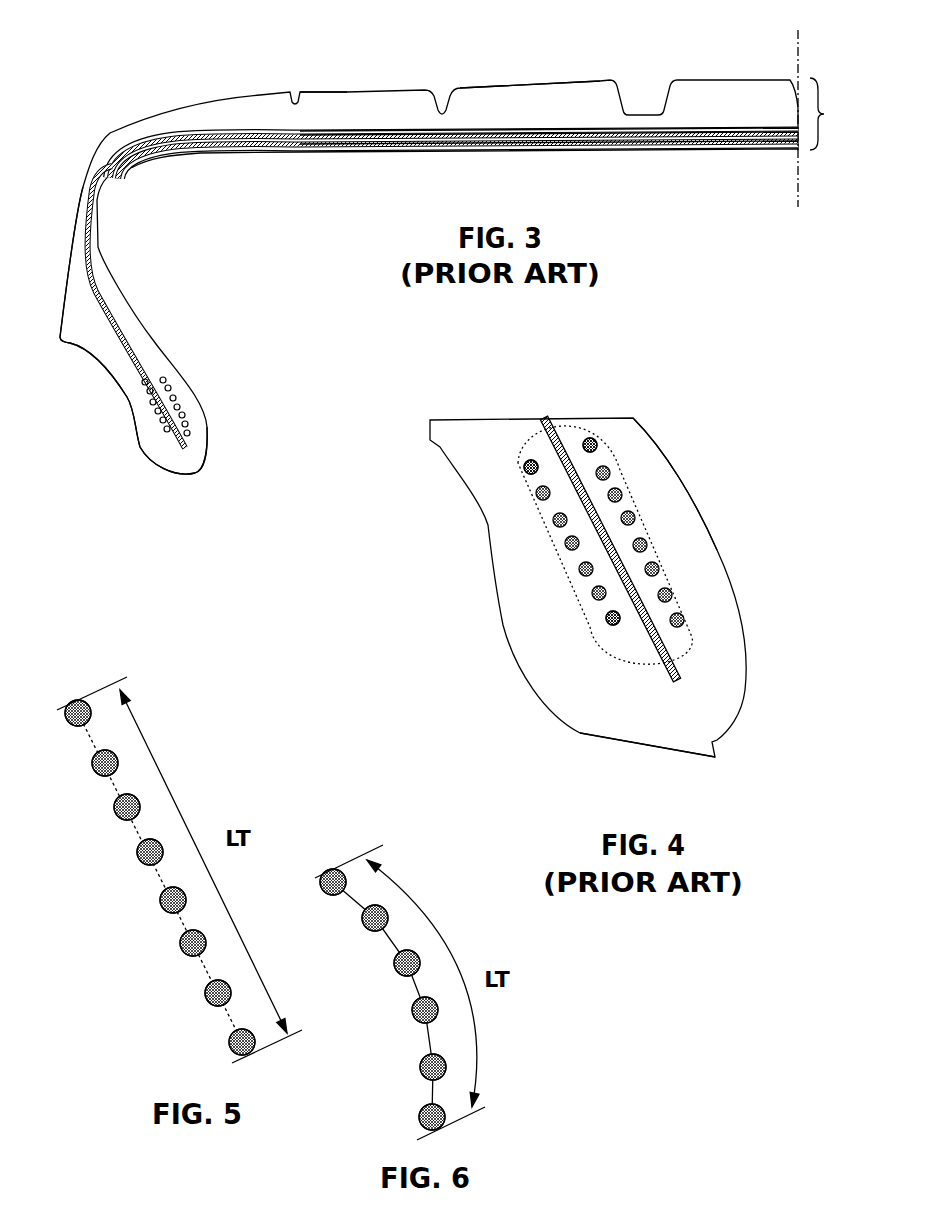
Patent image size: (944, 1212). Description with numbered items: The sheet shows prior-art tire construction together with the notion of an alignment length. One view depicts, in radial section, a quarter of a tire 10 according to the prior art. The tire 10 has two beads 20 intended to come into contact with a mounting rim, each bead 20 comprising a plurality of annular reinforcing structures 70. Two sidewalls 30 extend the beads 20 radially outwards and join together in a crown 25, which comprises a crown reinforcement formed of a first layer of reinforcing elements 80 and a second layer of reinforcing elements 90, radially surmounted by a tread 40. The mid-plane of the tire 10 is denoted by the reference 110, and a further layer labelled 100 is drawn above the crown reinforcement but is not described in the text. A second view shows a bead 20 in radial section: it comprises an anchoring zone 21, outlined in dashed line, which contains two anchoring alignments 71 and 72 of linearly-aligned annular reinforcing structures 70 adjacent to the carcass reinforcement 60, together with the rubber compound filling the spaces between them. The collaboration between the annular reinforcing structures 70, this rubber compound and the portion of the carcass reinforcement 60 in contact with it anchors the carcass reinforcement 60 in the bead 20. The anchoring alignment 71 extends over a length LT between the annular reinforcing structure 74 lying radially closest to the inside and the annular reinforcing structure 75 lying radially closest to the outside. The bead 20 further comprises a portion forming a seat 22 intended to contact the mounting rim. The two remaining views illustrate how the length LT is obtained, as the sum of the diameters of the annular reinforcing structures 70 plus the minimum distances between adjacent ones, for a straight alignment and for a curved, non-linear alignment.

In FIG. 3, the tire 10 is at (125, 80).
In FIG. 3, the bead 20 is at (143, 440).
In FIG. 4, the bead 20 is at (800, 468).
In FIG. 4, the anchoring zone 21 is at (623, 477).
In FIG. 4, the seat 22 is at (650, 752).
In FIG. 3, the crown 25 is at (492, 128).
In FIG. 3, the sidewall 30 is at (72, 260).
In FIG. 3, the tread 40 is at (540, 117).
In FIG. 3, the carcass reinforcement 60 is at (90, 222).
In FIG. 4, the carcass reinforcement 60 is at (677, 657).
In FIG. 3, the annular reinforcing structures 70 is at (173, 398).
In FIG. 4, the annular reinforcing structures 70 is at (570, 547).
In FIG. 5, the annular reinforcing structures 70 is at (183, 947).
In FIG. 6, the annular reinforcing structures 70 is at (433, 1073).
In FIG. 4, the anchoring alignment 71 is at (522, 455).
In FIG. 4, the anchoring alignment 72 is at (580, 435).
In FIG. 4, the annular reinforcing structure 74 is at (610, 620).
In FIG. 4, the annular reinforcing structure 75 is at (523, 467).
In FIG. 3, the first layer of reinforcing elements 80 is at (352, 130).
In FIG. 3, the second layer of reinforcing elements 90 is at (393, 132).
In FIG. 3, the cap ply 100 is at (475, 132).
In FIG. 3, the mid-plane 110 is at (800, 204).